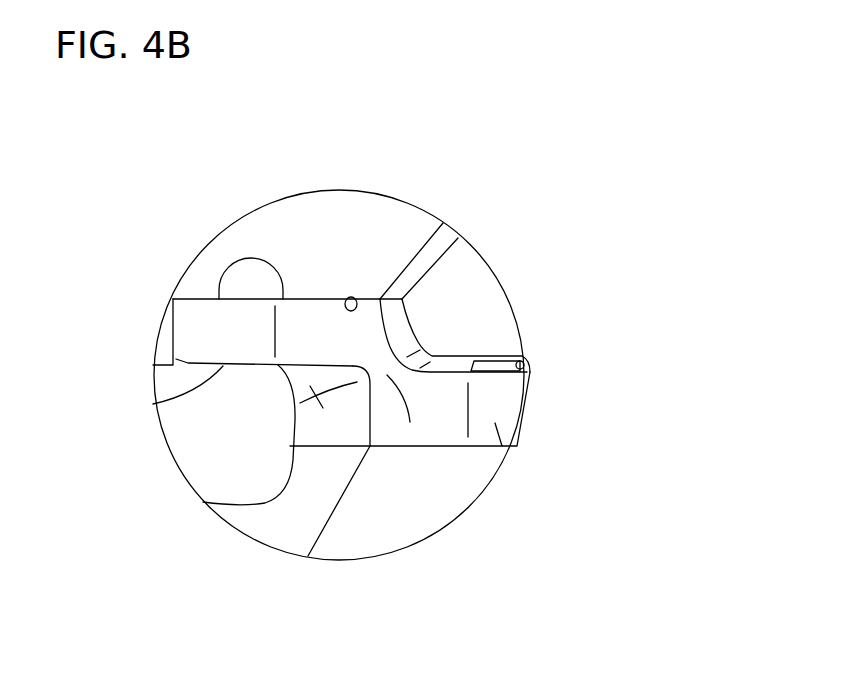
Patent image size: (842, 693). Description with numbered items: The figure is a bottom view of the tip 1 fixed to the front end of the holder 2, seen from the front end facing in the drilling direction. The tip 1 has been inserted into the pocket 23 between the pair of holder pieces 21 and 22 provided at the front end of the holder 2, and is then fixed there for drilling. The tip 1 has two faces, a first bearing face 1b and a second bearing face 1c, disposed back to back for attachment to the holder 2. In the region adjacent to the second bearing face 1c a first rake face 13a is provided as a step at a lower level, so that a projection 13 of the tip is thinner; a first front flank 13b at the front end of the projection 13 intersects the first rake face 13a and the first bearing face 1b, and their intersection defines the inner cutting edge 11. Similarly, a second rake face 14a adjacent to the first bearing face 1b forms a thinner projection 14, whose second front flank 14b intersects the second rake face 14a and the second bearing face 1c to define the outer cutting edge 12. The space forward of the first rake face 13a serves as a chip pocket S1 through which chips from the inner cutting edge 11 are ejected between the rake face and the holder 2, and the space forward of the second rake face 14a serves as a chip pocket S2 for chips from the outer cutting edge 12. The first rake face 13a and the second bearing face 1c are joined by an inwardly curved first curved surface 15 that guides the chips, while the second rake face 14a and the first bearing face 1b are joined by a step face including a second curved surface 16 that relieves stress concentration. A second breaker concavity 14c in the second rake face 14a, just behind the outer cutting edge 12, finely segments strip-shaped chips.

The tip 1 is at (480, 449).
The first bearing face 1b is at (318, 298).
The second bearing face 1c is at (388, 446).
The holder 2 is at (296, 190).
The inner cutting edge 11 is at (290, 390).
The outer cutting edge 12 is at (483, 298).
The projection 13 is at (171, 323).
The first rake face 13a is at (153, 404).
The first front flank 13b is at (198, 320).
The projection 14 is at (526, 407).
The second rake face 14a is at (462, 353).
The second front flank 14b is at (499, 440).
The second breaker concavity 14c is at (524, 361).
The first curved surface 15 is at (320, 446).
The second curved surface 16 is at (447, 354).
The holder piece 21 is at (267, 235).
The holder piece 22 is at (430, 513).
The pocket 23 is at (347, 298).
The chip pocket S1 is at (185, 443).
The chip pocket S2 is at (482, 305).